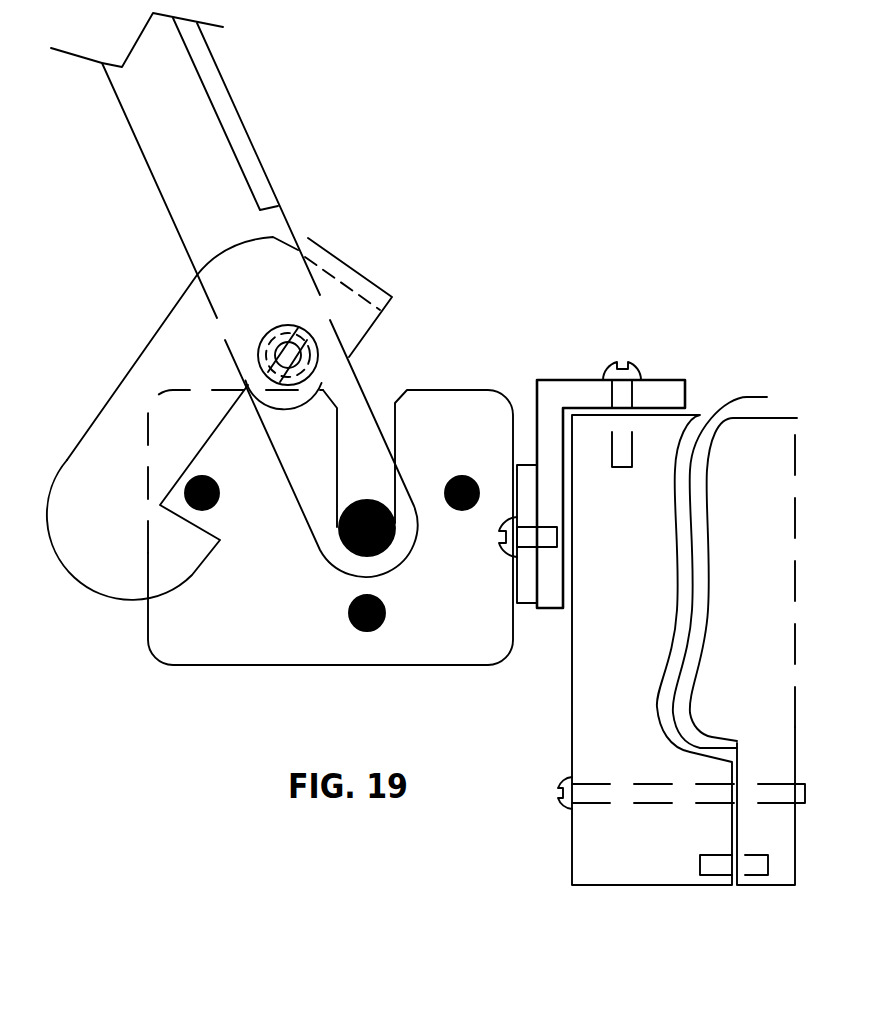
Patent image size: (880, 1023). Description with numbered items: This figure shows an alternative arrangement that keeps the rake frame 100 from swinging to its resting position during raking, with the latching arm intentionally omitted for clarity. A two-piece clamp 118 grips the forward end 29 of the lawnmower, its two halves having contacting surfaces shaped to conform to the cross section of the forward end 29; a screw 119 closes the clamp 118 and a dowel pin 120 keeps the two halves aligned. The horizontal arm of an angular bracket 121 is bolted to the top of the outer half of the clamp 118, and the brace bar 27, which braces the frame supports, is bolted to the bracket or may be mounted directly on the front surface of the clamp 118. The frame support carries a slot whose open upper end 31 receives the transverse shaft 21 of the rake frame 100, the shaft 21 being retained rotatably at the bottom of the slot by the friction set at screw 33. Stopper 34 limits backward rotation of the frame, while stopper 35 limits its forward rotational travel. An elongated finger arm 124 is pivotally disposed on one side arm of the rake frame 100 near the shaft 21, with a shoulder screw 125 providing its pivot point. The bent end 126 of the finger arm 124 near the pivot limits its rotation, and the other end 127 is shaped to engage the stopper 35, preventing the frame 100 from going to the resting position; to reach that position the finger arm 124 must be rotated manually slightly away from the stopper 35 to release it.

The rake frame 100 is at (236, 107).
The bent end of finger arm 126 is at (343, 258).
The elongated finger arm 124 is at (115, 373).
The engaging end of finger arm 127 is at (100, 592).
The shoulder screw 125 is at (266, 333).
The stopper 35 is at (222, 483).
The upper end of slot 31 is at (384, 400).
The stopper 34 is at (448, 478).
The transverse shaft 21 is at (388, 550).
The screw 33 is at (378, 636).
The brace bar 27 is at (527, 612).
The angular bracket 121 is at (562, 380).
The two-piece clamp 118 is at (618, 893).
The forward end of lawnmower 29 is at (738, 395).
The dowel pin 120 is at (773, 863).
The screw 119 is at (540, 797).